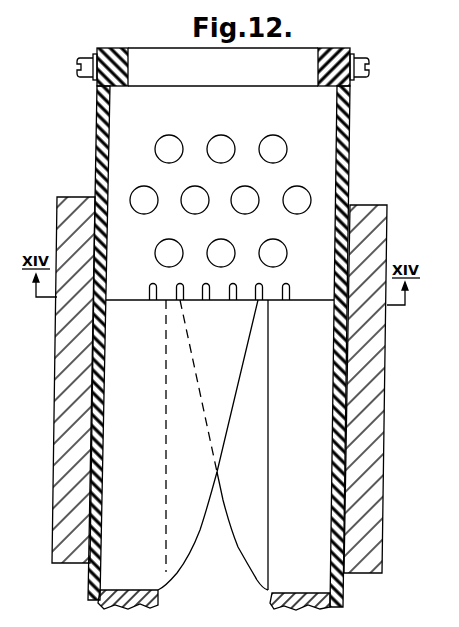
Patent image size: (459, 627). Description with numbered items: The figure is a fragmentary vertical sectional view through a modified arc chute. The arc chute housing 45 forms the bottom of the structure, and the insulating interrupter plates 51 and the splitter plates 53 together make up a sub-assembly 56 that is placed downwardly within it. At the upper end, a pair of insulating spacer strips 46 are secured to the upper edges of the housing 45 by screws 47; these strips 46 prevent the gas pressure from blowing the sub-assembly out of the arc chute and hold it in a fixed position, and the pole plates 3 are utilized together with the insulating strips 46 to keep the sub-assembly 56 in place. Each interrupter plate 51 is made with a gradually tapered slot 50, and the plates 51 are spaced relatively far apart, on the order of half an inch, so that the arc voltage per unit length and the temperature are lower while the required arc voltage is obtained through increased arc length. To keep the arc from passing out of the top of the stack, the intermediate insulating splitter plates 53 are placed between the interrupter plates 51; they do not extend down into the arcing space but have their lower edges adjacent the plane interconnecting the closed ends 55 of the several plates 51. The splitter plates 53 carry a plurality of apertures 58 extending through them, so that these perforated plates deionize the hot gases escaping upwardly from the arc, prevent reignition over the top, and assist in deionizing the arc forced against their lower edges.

The pole plate 3 is at (55, 564).
The arc chute housing 45 is at (343, 598).
The insulating spacer strip 46 is at (340, 48).
The screw 47 is at (353, 90).
The insulating splitter plate 53 is at (333, 178).
The closed end 55 is at (261, 297).
The sub-assembly 56 is at (231, 347).
The aperture 58 is at (183, 194).
The tapered slot 50 is at (228, 532).
The interrupter plate 51 is at (276, 568).